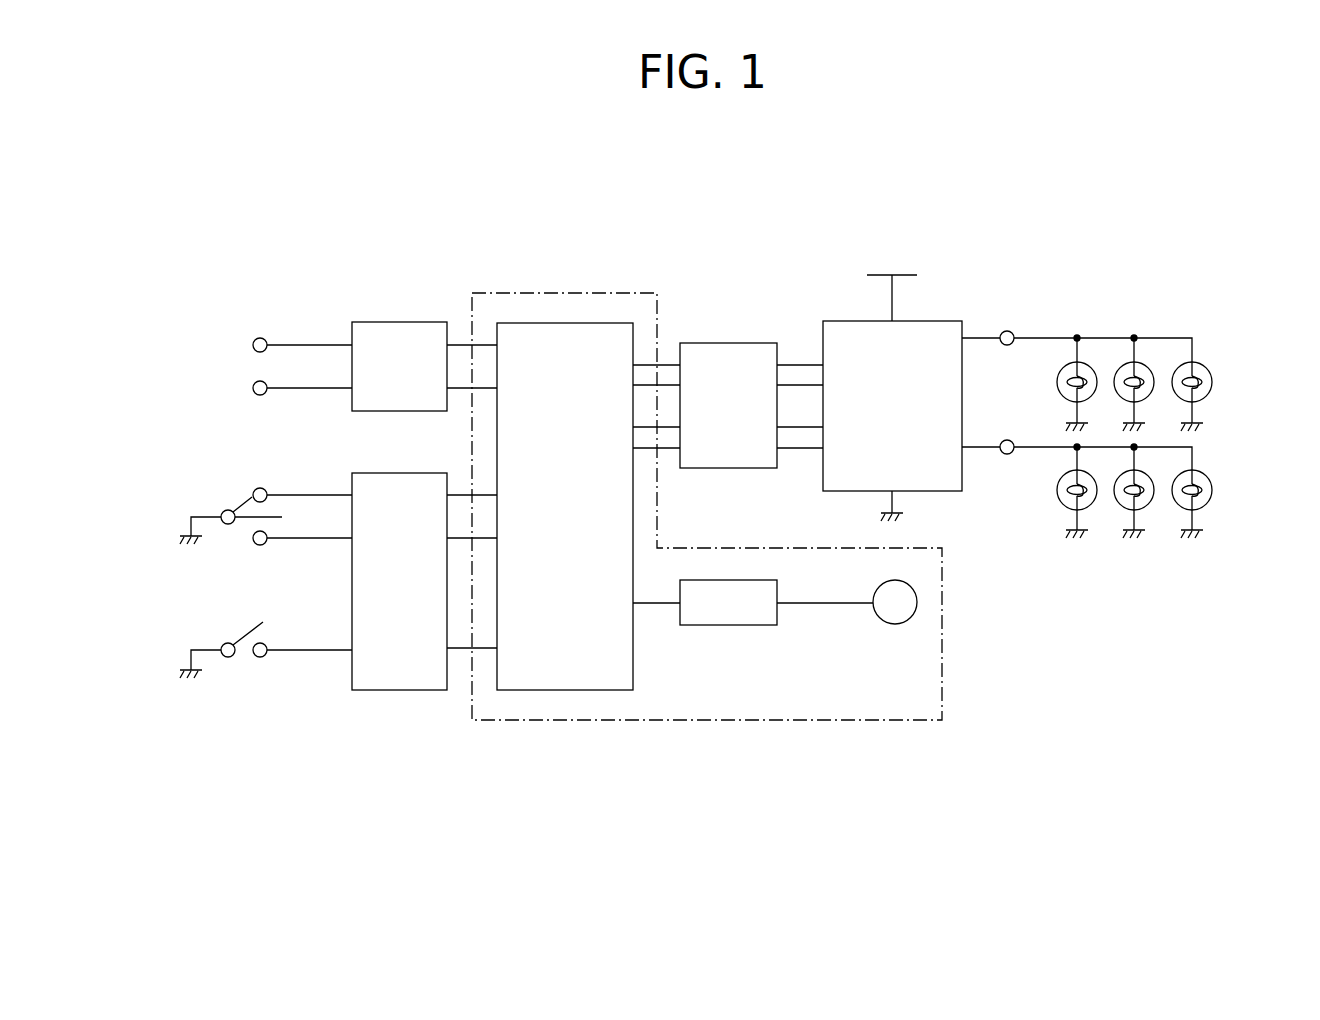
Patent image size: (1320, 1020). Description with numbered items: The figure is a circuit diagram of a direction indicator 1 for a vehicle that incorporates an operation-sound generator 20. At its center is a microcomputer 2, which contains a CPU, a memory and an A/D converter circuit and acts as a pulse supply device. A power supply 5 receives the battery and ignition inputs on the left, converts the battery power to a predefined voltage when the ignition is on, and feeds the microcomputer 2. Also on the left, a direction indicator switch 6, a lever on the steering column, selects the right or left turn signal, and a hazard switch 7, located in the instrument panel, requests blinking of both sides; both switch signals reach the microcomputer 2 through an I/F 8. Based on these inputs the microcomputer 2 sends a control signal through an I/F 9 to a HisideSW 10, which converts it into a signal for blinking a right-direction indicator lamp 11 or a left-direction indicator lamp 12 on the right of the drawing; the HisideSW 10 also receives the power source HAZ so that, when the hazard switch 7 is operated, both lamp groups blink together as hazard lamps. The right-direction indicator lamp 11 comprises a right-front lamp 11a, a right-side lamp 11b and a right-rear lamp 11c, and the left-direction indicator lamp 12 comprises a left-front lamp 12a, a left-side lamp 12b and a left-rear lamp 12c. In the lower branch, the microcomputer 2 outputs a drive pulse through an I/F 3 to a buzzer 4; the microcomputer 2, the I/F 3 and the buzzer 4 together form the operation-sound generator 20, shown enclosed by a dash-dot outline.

The direction indicator 1 is at (1063, 191).
The microcomputer 2 is at (588, 323).
The I/F (interface) 3 is at (738, 625).
The buzzer 4 is at (894, 624).
The power supply 5 is at (405, 322).
The direction indicator switch 6 is at (237, 506).
The hazard switch 7 is at (248, 636).
The I/F (interface) 8 is at (392, 473).
The I/F (interface) 9 is at (730, 343).
The HisideSW 10 is at (934, 321).
The right-direction indicator lamp 11 is at (1128, 323).
The right-front lamp 11a is at (1088, 365).
The right-side lamp 11b is at (1146, 365).
The right-rear lamp 11c is at (1205, 344).
The left-direction indicator lamp 12 is at (1128, 551).
The left-front lamp 12a is at (1088, 507).
The left-side lamp 12b is at (1146, 507).
The left-rear lamp 12c is at (1205, 545).
The operation-sound generator 20 is at (830, 720).